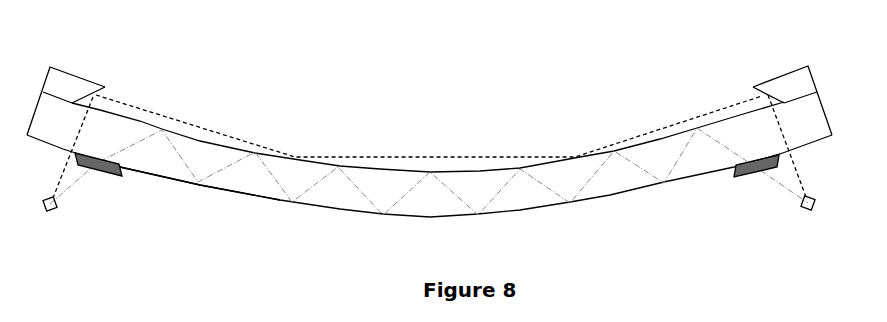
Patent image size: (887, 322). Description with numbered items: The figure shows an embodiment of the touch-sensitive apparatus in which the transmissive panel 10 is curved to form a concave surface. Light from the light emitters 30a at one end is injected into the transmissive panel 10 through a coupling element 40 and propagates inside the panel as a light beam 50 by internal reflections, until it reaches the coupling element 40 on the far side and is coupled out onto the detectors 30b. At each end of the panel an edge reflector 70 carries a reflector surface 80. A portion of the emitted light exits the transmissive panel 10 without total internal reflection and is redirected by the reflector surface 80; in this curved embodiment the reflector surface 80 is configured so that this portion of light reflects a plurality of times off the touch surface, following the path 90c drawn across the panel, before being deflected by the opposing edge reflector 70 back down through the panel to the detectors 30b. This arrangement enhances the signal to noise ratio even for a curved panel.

The transmissive panel 10 is at (245, 170).
The light emitters 30a is at (52, 213).
The detectors 30b is at (816, 209).
The coupling element 40 is at (102, 177).
The light beam 50 is at (183, 180).
The edge reflector 70 is at (105, 88).
The reflector surface 80 is at (106, 92).
The path 90c is at (457, 157).